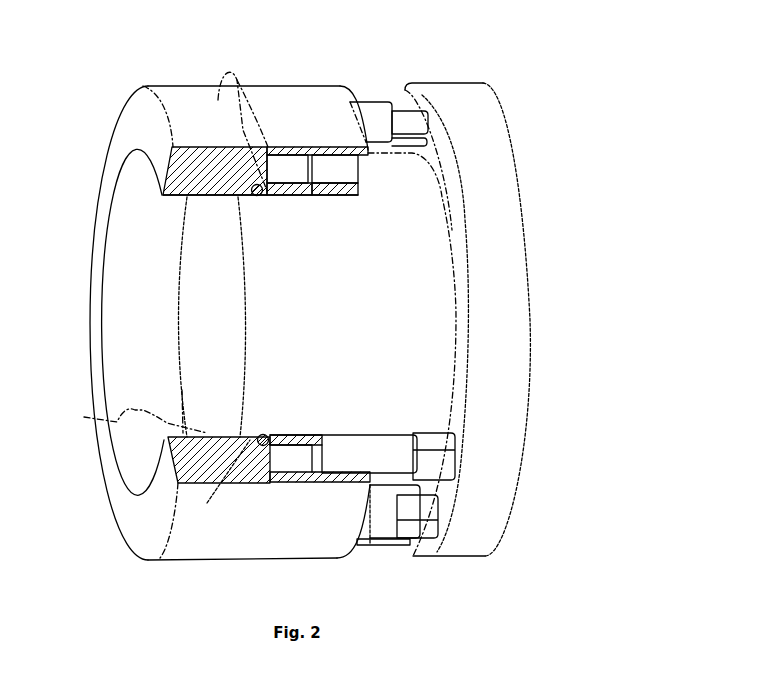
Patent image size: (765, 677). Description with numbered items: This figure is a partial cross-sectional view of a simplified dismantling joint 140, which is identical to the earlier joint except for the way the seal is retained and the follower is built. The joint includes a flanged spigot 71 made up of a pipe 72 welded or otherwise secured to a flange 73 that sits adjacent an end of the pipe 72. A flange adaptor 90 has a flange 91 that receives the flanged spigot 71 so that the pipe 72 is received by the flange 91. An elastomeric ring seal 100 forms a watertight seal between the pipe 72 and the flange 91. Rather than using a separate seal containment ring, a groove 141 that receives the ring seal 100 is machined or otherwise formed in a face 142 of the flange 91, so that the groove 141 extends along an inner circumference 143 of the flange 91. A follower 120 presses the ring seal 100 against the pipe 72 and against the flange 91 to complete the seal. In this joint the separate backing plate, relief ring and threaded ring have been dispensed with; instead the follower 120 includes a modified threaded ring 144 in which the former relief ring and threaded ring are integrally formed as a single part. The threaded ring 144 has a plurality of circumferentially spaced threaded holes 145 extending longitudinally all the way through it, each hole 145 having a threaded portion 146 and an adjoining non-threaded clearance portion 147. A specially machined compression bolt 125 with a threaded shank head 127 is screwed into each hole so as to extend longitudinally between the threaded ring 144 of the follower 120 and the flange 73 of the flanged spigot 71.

The flanged spigot 71 is at (460, 82).
The pipe 72 is at (263, 317).
The flange 73 is at (466, 323).
The flange adaptor 90 is at (149, 84).
The flange 91 is at (236, 322).
The elastomeric ring seal 100 is at (218, 100).
The follower 120 is at (268, 84).
The compression bolt 125 is at (372, 112).
The threaded shank head 127 is at (406, 100).
The dismantling joint 140 is at (529, 197).
The groove 141 is at (207, 503).
The face 142 is at (267, 483).
The inner circumference 143 is at (131, 411).
The threaded ring 144 is at (298, 525).
The threaded holes 145 is at (301, 190).
The threaded portion 146 is at (342, 196).
The non-threaded clearance portion 147 is at (258, 196).